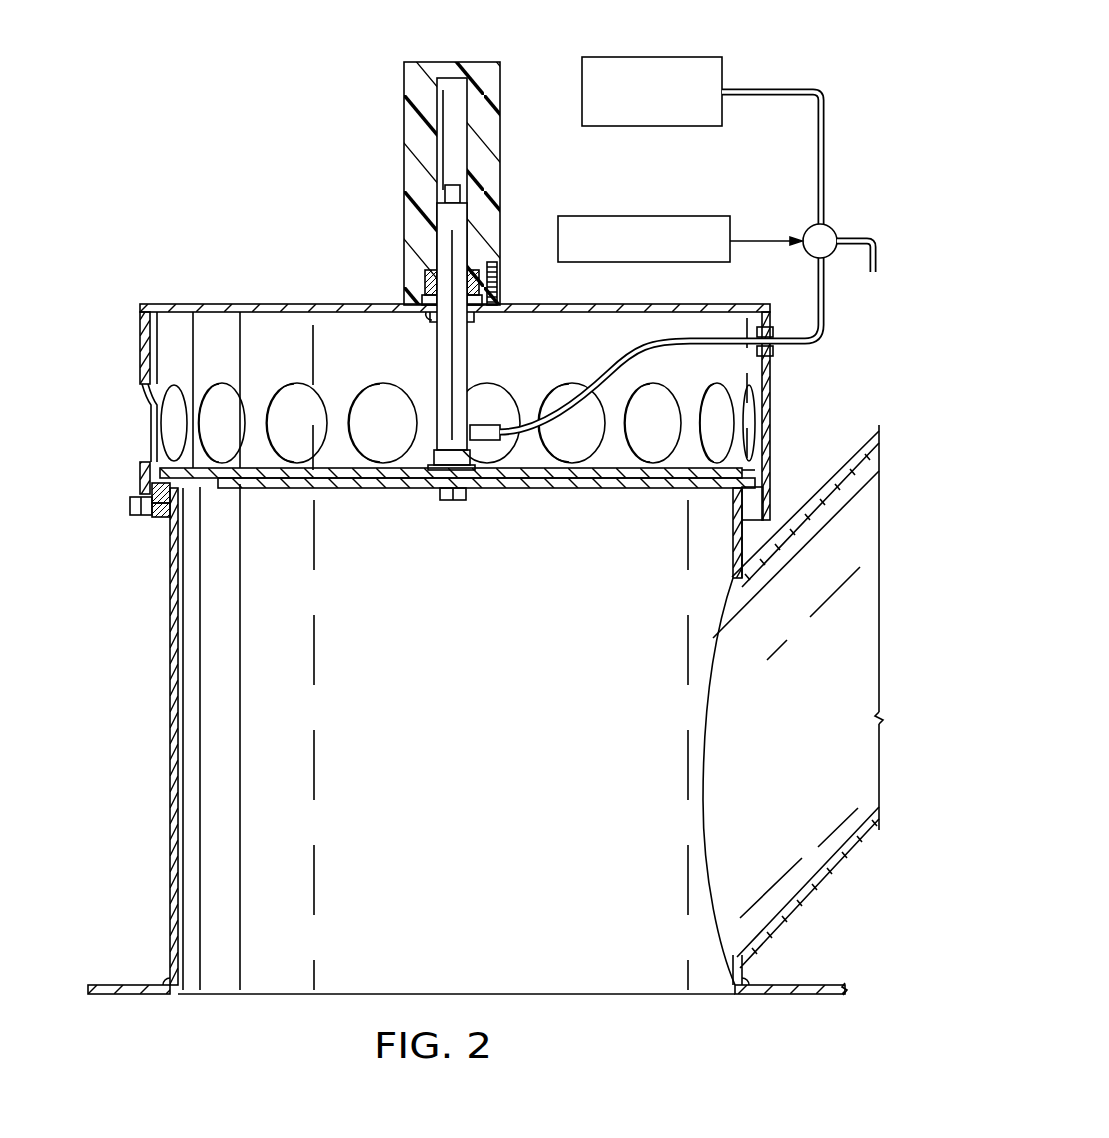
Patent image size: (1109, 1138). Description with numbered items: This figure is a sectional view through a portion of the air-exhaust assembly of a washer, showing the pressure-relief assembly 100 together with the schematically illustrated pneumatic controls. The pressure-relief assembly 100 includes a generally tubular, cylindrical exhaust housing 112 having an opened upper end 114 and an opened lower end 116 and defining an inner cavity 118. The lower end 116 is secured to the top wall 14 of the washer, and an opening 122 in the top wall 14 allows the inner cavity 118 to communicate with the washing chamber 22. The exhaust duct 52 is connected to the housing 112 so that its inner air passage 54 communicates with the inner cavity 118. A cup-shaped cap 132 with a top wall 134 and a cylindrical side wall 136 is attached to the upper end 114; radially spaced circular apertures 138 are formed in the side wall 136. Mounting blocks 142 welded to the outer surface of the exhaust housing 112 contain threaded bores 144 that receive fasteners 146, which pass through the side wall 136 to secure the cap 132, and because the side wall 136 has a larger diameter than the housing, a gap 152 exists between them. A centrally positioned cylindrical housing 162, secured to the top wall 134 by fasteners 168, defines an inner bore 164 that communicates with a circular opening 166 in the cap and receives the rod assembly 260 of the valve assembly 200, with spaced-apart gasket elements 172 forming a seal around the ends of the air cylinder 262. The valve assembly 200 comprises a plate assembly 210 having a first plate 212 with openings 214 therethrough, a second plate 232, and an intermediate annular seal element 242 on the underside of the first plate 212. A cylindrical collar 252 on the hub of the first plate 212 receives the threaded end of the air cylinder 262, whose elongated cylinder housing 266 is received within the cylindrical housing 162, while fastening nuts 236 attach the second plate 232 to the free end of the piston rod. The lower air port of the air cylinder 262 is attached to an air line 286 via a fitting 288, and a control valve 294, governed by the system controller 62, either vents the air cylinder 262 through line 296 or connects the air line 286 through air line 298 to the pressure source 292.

The top wall 14 is at (130, 984).
The washing chamber 22 is at (772, 997).
The exhaust duct 52 is at (838, 862).
The inner air passage 54 is at (787, 858).
The system controller 62 is at (608, 216).
The pressure-relief assembly 100 is at (201, 276).
The exhaust housing 112 is at (159, 734).
The upper end 114 is at (733, 493).
The lower end 116 is at (195, 990).
The inner cavity 118 is at (454, 831).
The opening 122 is at (705, 990).
The cap 132 is at (264, 303).
The top wall 134 is at (316, 303).
The side wall 136 is at (140, 350).
The circular apertures 138 is at (158, 408).
The mounting blocks 142 is at (163, 520).
The threaded bores 144 is at (168, 500).
The fasteners 146 is at (134, 512).
The gap 152 is at (753, 505).
The cylindrical housing 162 is at (408, 82).
The inner bore 164 is at (462, 80).
The circular opening 166 is at (440, 320).
The fasteners 168 is at (497, 275).
The gasket elements 172 is at (432, 274).
The valve assembly 200 is at (390, 489).
The plate assembly 210 is at (520, 500).
The first plate 212 is at (738, 457).
The opening 214 is at (316, 522).
The second plate 232 is at (306, 480).
The fastening nuts 236 is at (448, 500).
The annular seal element 242 is at (752, 498).
The cylindrical collar 252 is at (427, 448).
The rod assembly 260 is at (493, 348).
The air cylinder 262 is at (419, 232).
The cylinder housing 266 is at (437, 358).
The air line 286 is at (688, 338).
The fitting 288 is at (485, 425).
The pressure source 292 is at (668, 56).
The control valve 294 is at (808, 228).
The vent line 296 is at (822, 262).
The air line 298 is at (816, 135).